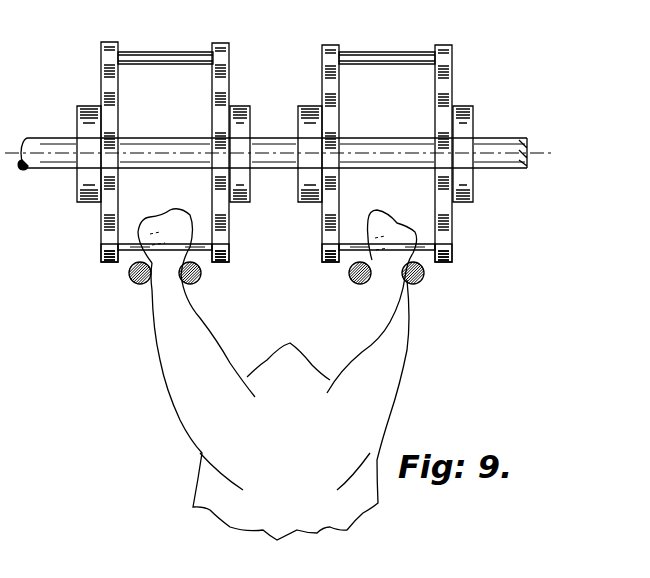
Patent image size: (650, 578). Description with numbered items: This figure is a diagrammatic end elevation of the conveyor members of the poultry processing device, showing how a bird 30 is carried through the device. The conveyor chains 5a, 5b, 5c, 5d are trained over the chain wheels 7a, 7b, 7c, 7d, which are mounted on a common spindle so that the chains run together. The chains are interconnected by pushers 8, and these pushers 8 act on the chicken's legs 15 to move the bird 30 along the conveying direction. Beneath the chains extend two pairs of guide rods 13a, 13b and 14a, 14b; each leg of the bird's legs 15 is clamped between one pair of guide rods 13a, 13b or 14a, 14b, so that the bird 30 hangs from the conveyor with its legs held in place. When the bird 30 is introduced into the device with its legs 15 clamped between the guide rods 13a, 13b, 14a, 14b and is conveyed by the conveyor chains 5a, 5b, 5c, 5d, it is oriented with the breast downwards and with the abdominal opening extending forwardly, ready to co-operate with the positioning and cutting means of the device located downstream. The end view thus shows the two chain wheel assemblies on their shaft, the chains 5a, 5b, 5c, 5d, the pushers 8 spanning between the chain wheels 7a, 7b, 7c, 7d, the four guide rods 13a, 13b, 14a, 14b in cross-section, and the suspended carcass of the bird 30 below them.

The conveyor chain 5a is at (112, 245).
The conveyor chain 5b is at (224, 246).
The conveyor chain 5c is at (327, 241).
The conveyor chain 5d is at (447, 246).
The chain wheel 7a is at (101, 76).
The chain wheel 7b is at (229, 76).
The chain wheel 7c is at (322, 78).
The chain wheel 7d is at (452, 100).
The pusher 8 is at (206, 243).
The guide rod 13a is at (132, 283).
The guide rod 13b is at (201, 282).
The guide rod 14a is at (419, 283).
The guide rod 14b is at (352, 281).
The bird's legs 15 is at (168, 222).
The bird 30 is at (405, 373).